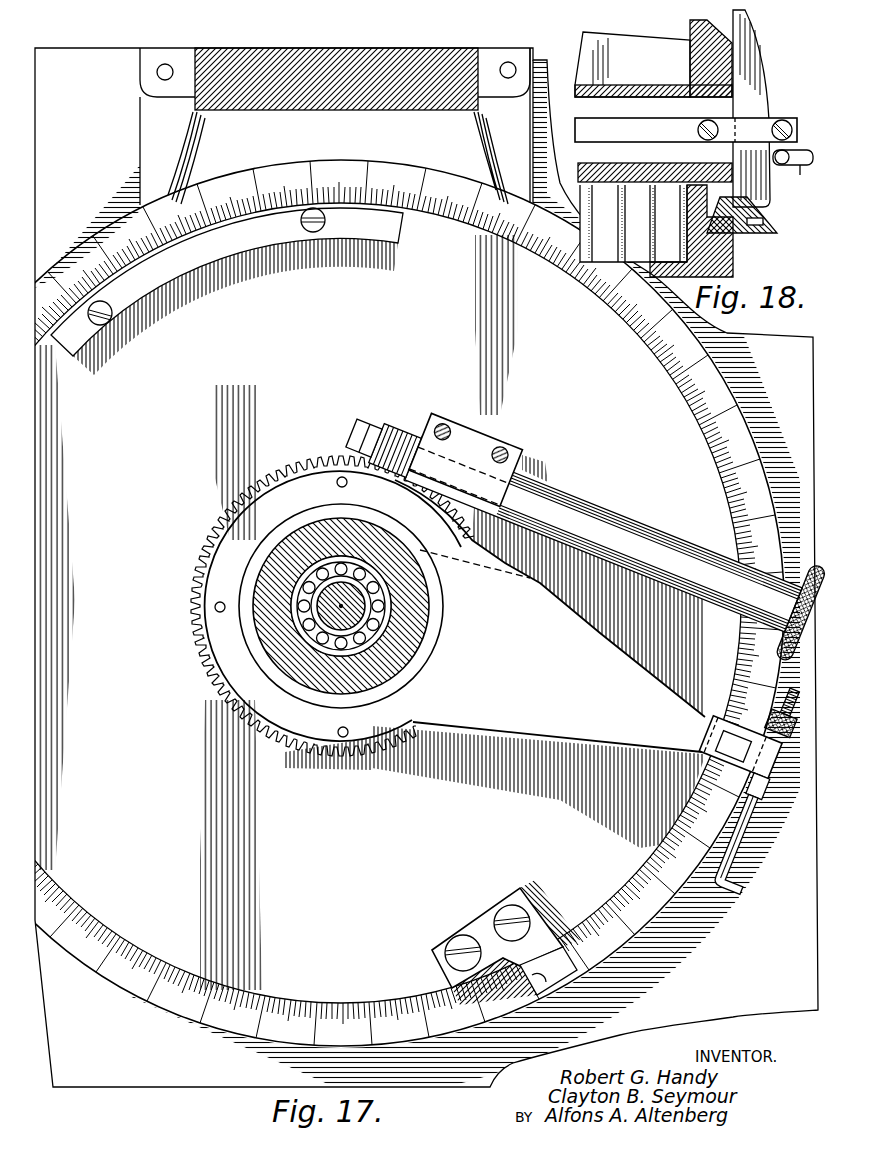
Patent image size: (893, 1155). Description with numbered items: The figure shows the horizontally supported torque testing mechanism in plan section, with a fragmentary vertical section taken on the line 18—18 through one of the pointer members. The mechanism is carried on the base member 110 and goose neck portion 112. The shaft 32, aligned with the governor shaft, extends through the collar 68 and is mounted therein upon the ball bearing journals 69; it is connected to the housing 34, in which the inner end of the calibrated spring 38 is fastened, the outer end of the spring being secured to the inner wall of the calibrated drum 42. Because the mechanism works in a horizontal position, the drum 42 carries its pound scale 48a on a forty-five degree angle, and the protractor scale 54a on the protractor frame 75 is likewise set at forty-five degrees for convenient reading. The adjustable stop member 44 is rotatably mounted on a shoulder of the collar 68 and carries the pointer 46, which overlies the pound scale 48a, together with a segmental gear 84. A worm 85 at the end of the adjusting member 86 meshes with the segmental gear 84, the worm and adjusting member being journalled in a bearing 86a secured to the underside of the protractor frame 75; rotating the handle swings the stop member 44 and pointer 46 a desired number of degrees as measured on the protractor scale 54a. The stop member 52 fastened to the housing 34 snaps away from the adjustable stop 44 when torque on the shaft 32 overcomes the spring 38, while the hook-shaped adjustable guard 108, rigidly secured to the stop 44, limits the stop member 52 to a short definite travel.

In FIG. 17, the section line 18— 18 is at (622, 812).
In FIG. 17, the shaft 32 is at (330, 608).
In FIG. 17, the housing 34 is at (426, 567).
In FIG. 18, the housing 34 is at (637, 166).
In FIG. 18, the calibrated spring 38 is at (582, 200).
In FIG. 18, the calibrated drum 42 is at (737, 250).
In FIG. 17, the adjustable stop member 44 is at (556, 735).
In FIG. 18, the adjustable stop member 44 is at (643, 127).
In FIG. 17, the pointer 46 is at (720, 745).
In FIG. 18, the pointer 46 is at (760, 82).
In FIG. 17, the pound scale 48a is at (112, 973).
In FIG. 18, the pound scale 48a is at (768, 216).
In FIG. 17, the stop member 52 is at (587, 967).
In FIG. 18, the protractor scale 54a is at (722, 37).
In FIG. 17, the collar 68 is at (297, 663).
In FIG. 17, the ball bearing journals 69 is at (305, 595).
In FIG. 18, the protractor frame 75 is at (653, 64).
In FIG. 17, the segmental gear 84 is at (385, 762).
In FIG. 17, the worm 85 is at (395, 422).
In FIG. 17, the adjusting member 86 is at (792, 617).
In FIG. 17, the bearing 86a is at (485, 443).
In FIG. 17, the adjustable guard 108 is at (753, 857).
In FIG. 18, the adjustable guard 108 is at (793, 176).
In FIG. 17, the base member 110 is at (148, 1073).
In FIG. 17, the goose neck portion 112 is at (320, 103).